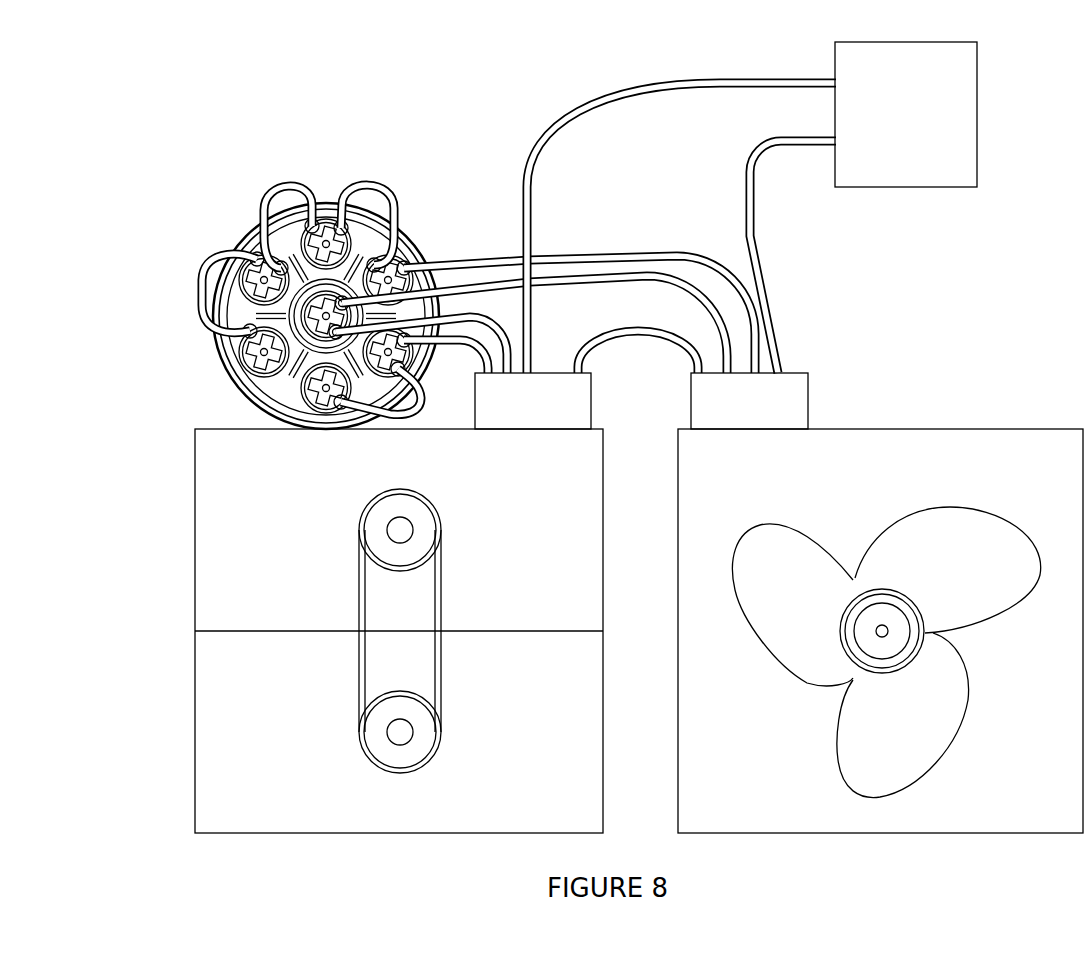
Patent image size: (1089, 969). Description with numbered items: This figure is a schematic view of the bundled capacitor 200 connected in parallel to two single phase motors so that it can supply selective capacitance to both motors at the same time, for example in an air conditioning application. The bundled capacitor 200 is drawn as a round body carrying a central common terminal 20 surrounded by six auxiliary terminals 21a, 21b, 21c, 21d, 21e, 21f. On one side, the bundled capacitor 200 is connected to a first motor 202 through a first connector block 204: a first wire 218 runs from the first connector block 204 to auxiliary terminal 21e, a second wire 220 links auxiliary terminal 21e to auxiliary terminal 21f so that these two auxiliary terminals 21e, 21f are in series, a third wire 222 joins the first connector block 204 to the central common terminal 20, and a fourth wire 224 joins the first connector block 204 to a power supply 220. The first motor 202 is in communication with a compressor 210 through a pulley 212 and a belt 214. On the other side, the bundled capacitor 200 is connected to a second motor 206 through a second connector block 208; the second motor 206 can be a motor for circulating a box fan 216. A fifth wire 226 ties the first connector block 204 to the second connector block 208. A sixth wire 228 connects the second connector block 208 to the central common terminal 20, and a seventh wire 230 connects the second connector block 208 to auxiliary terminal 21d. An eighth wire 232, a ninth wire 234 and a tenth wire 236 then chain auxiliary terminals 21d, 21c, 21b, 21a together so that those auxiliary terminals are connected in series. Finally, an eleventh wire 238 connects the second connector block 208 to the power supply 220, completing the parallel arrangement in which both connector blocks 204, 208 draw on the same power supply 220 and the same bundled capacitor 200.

The central common terminal 20 is at (235, 388).
The auxiliary terminal 21a is at (228, 358).
The auxiliary terminal 21b is at (247, 241).
The auxiliary terminal 21c is at (343, 192).
The auxiliary terminal 21d is at (437, 209).
The auxiliary terminal 21e is at (432, 385).
The auxiliary terminal 21f is at (290, 412).
The bundled capacitor 200 is at (327, 202).
The first motor 202 is at (582, 491).
The first connector block 204 is at (591, 403).
The second motor 206 is at (702, 528).
The second connector block 208 is at (808, 403).
The compressor 210 is at (582, 694).
The pulley 212 is at (400, 530).
The belt 214 is at (438, 607).
The box fan 216 is at (908, 530).
The first wire 218 is at (488, 340).
The second wire 220 is at (937, 127).
The third wire 222 is at (507, 310).
The fourth wire 224 is at (563, 124).
The fifth wire 226 is at (640, 331).
The sixth wire 228 is at (633, 275).
The seventh wire 230 is at (474, 264).
The eighth wire 232 is at (390, 197).
The ninth wire 234 is at (278, 190).
The tenth wire 236 is at (210, 268).
The eleventh wire 238 is at (758, 250).